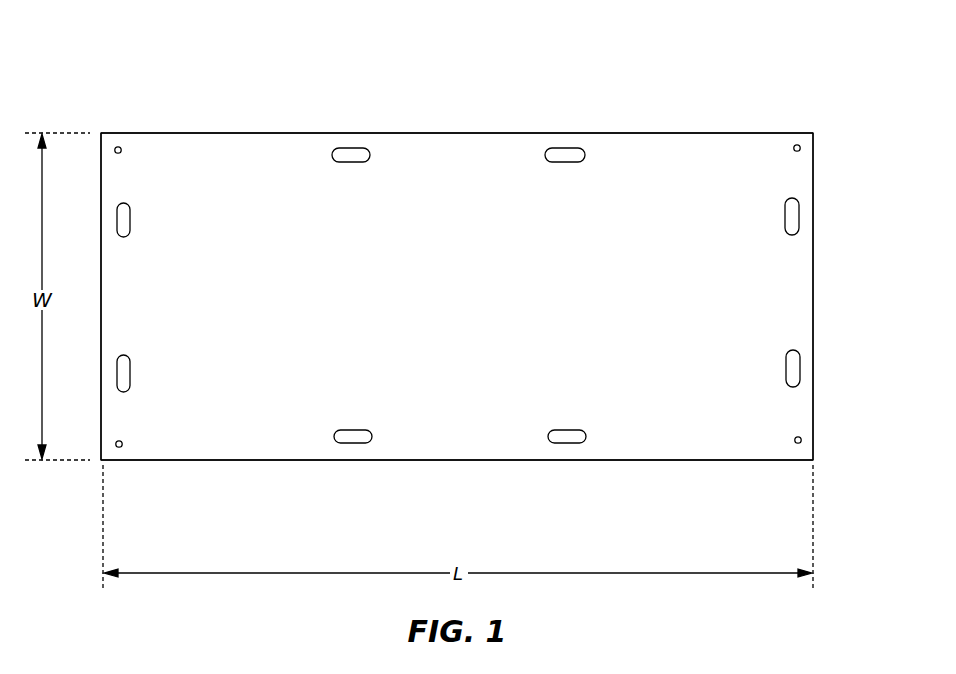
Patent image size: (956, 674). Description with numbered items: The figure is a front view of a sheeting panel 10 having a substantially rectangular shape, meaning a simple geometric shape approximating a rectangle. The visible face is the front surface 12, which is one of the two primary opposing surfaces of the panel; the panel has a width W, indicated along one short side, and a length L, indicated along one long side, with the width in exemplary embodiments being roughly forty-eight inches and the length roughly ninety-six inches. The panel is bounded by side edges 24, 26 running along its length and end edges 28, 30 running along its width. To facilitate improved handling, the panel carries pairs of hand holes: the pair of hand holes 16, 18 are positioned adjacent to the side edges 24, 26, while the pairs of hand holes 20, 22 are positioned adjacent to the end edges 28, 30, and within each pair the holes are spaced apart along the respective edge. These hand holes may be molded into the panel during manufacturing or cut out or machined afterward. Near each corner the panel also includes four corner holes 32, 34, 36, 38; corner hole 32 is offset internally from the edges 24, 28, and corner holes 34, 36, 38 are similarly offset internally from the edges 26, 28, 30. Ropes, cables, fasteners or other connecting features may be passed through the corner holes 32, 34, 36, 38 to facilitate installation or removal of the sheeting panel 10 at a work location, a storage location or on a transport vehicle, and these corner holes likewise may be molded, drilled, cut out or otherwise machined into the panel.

The sheeting panel 10 is at (708, 63).
The front surface 12 is at (471, 305).
The hand hole 16 is at (549, 162).
The hand hole 18 is at (565, 443).
The hand hole 20 is at (797, 236).
The hand hole 22 is at (124, 236).
The side edge 24 is at (495, 132).
The side edge 26 is at (650, 461).
The end edge 28 is at (815, 400).
The end edge 30 is at (100, 408).
The corner hole 32 is at (797, 144).
The corner hole 34 is at (798, 444).
The corner hole 36 is at (119, 448).
The corner hole 38 is at (118, 146).